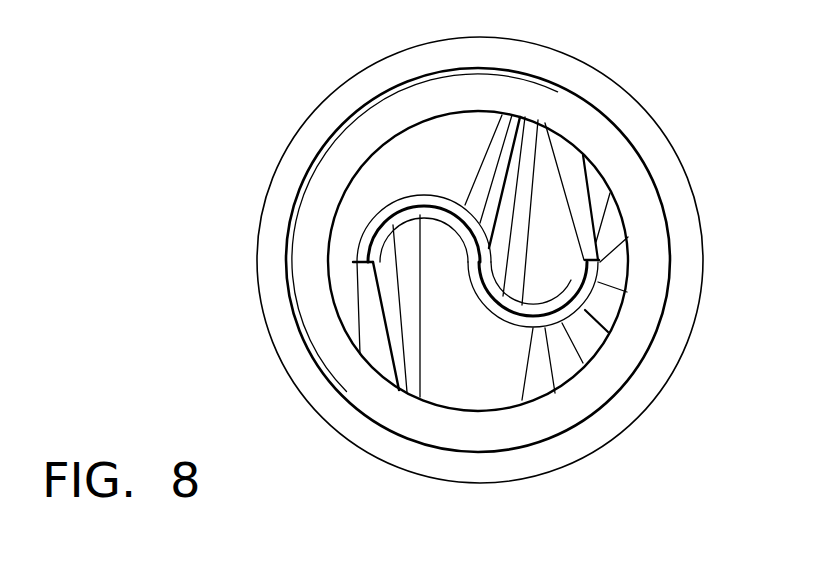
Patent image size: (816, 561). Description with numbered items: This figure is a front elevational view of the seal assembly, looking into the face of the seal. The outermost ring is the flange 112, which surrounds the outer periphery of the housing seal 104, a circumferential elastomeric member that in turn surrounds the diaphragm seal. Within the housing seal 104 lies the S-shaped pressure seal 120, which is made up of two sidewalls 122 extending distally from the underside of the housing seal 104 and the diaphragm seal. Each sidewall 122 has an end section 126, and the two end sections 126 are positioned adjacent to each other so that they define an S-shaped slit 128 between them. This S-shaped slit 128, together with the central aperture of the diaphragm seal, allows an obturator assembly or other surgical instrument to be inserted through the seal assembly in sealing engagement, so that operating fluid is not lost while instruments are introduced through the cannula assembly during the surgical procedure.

The housing seal 104 is at (345, 158).
The flange 112 is at (352, 428).
The S-shaped pressure seal 120 is at (345, 293).
The sidewall 122 is at (482, 368).
The end section 126 is at (352, 237).
The S-shaped slit 128 is at (394, 198).